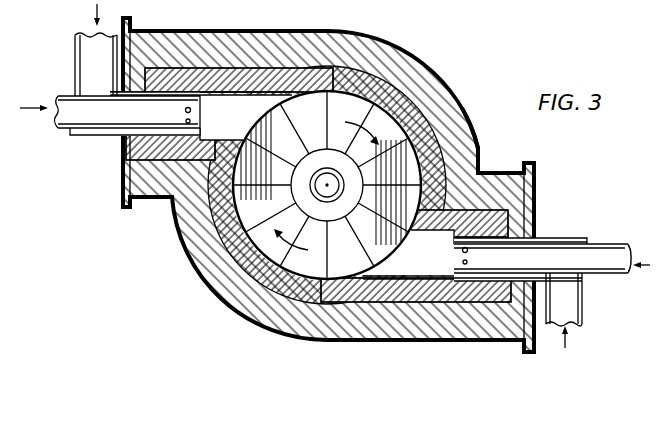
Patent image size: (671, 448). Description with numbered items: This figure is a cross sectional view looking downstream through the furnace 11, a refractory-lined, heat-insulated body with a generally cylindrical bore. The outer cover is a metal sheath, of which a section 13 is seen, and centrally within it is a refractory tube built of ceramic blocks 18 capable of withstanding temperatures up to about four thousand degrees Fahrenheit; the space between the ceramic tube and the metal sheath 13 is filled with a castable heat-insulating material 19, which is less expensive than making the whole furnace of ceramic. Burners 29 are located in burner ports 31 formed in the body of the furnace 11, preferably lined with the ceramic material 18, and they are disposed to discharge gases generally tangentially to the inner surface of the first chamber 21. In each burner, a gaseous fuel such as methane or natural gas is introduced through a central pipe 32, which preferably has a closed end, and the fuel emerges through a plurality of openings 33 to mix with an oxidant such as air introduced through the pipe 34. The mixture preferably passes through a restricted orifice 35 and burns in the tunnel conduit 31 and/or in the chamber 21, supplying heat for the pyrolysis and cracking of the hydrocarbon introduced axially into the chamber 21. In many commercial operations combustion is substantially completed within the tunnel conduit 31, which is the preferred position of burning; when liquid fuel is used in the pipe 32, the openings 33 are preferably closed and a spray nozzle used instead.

The furnace 11 is at (441, 63).
The metal sheath section 13 is at (464, 107).
The ceramic blocks 18 is at (359, 100).
The castable heat-insulating material 19 is at (481, 149).
The first chamber 21 is at (352, 265).
The burner 29 is at (214, 105).
The burner port 31 is at (236, 132).
The central pipe 32 is at (68, 98).
The openings 33 is at (186, 110).
The pipe 34 is at (75, 58).
The restricted orifice 35 is at (236, 162).